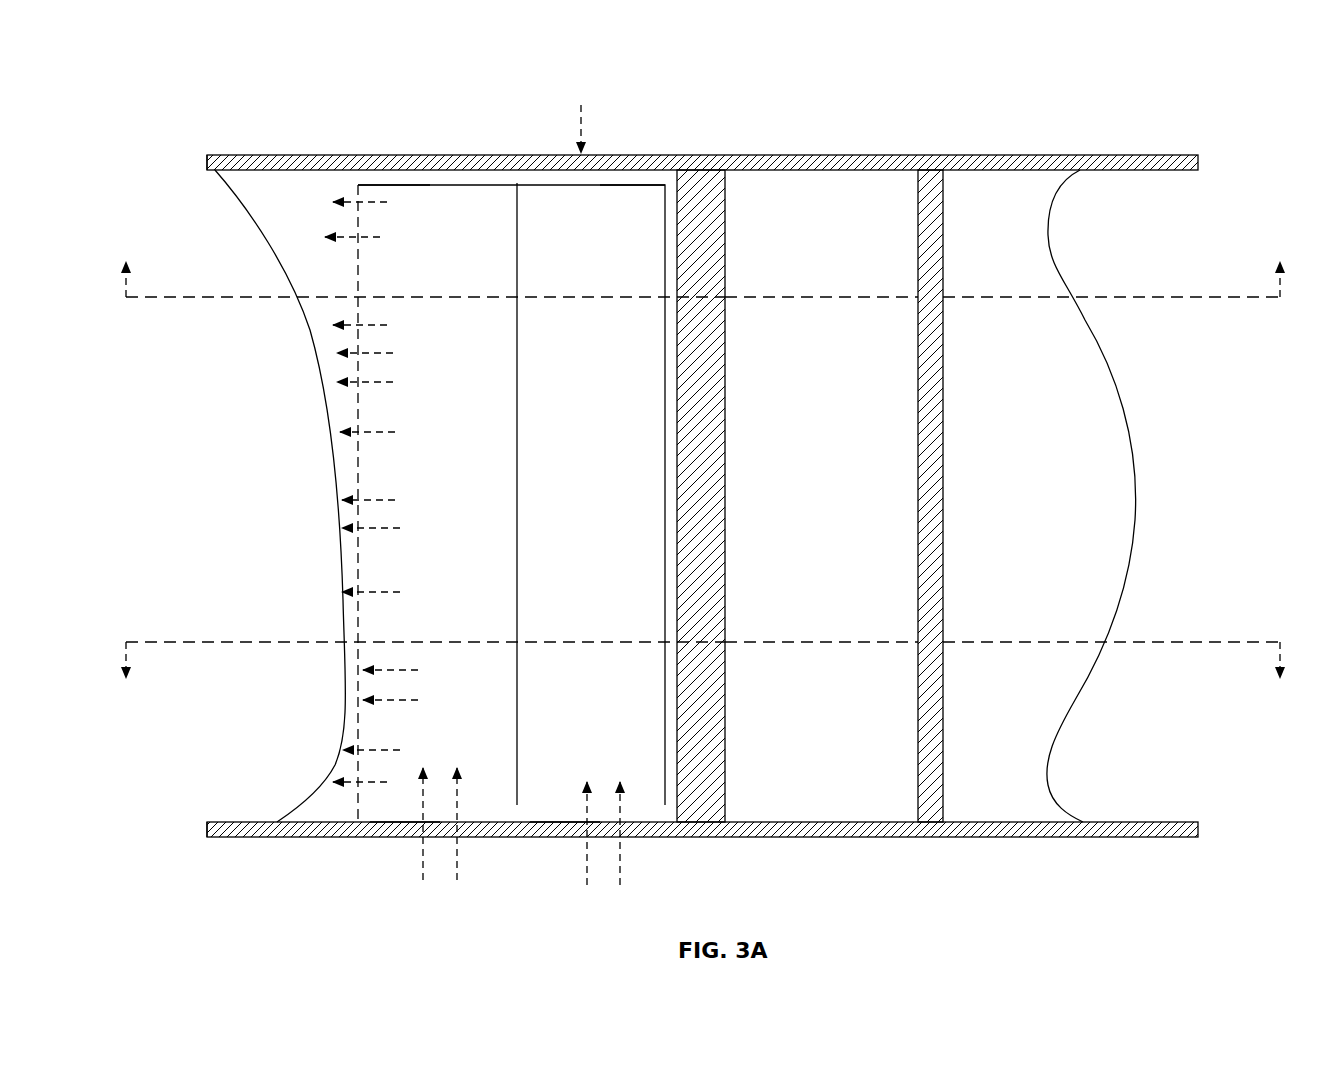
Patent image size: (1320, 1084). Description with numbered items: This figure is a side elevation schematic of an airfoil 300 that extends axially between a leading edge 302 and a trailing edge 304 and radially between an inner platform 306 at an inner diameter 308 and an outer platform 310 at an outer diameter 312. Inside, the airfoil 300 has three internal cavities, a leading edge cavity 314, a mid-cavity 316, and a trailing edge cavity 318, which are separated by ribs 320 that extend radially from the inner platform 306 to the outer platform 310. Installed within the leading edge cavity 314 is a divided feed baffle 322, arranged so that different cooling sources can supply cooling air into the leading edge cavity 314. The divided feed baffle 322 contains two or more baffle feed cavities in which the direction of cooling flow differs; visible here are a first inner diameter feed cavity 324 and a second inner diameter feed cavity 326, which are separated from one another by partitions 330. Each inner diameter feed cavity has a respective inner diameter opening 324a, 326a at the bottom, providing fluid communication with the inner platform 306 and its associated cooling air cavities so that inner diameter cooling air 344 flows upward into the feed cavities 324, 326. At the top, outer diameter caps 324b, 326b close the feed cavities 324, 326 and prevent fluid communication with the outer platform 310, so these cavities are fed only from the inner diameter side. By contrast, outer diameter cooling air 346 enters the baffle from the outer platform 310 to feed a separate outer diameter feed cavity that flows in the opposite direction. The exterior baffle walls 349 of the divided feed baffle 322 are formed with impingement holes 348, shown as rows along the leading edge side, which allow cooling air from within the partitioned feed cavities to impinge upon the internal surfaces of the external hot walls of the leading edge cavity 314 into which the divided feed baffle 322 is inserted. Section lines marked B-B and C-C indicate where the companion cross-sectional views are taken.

The airfoil 300 is at (1197, 72).
The leading edge 302 is at (335, 500).
The trailing edge 304 is at (1105, 358).
The inner platform 306 is at (240, 837).
The inner diameter 308 is at (200, 832).
The outer platform 310 is at (263, 155).
The outer diameter 312 is at (200, 160).
The leading edge cavity 314 is at (317, 210).
The mid-cavity 316 is at (837, 511).
The trailing edge cavity 318 is at (1050, 511).
The ribs 320 is at (725, 595).
The divided feed baffle 322 is at (540, 459).
The first inner diameter feed cavity 324 is at (368, 494).
The inner diameter opening 324a is at (402, 812).
The outer diameter cap 324b is at (404, 188).
The second inner diameter feed cavity 326 is at (511, 494).
The inner diameter opening 326a is at (560, 815).
The outer diameter cap 326b is at (618, 188).
The partitions 330 is at (517, 595).
The inner diameter cooling air 344 is at (462, 913).
The outer diameter cooling air 346 is at (600, 97).
The impingement holes 348 is at (360, 297).
The exterior baffle walls 349 is at (663, 433).